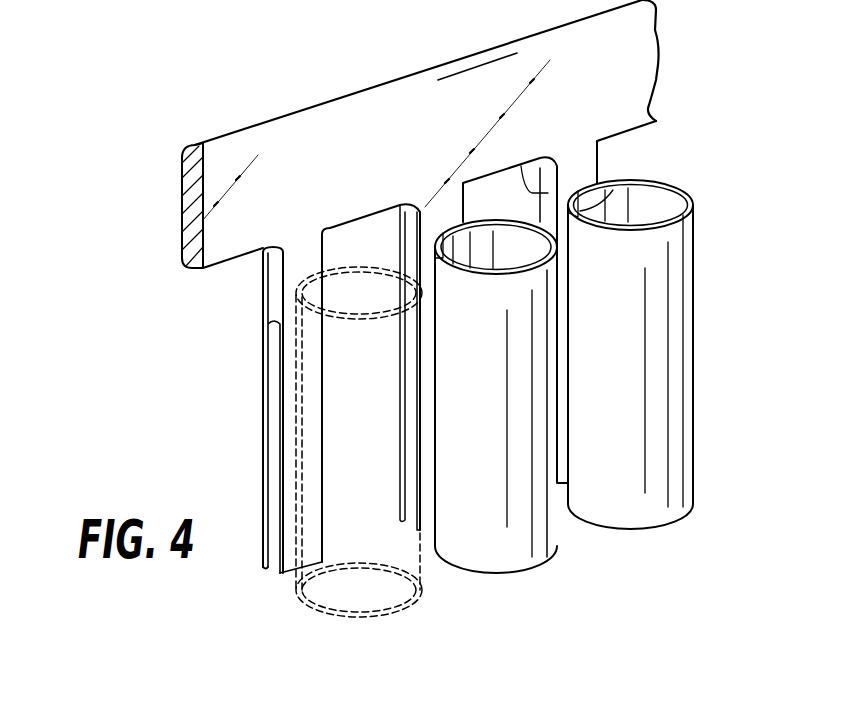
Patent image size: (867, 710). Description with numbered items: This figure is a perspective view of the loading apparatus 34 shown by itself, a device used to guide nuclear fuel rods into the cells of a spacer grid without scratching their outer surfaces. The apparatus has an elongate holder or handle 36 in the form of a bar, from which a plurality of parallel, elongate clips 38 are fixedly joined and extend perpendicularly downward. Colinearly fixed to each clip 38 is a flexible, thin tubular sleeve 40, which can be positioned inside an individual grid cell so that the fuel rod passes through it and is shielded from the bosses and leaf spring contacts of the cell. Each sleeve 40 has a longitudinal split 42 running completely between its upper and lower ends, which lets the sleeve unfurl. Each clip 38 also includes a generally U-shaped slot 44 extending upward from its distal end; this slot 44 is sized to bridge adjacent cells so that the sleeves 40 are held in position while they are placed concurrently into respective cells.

The loading apparatus 34 is at (324, 141).
The handle 36 is at (657, 76).
The clip 38 is at (463, 215).
The tubular sleeve 40 is at (564, 363).
The longitudinal split 42 is at (619, 179).
The U-shaped slot 44 is at (270, 467).